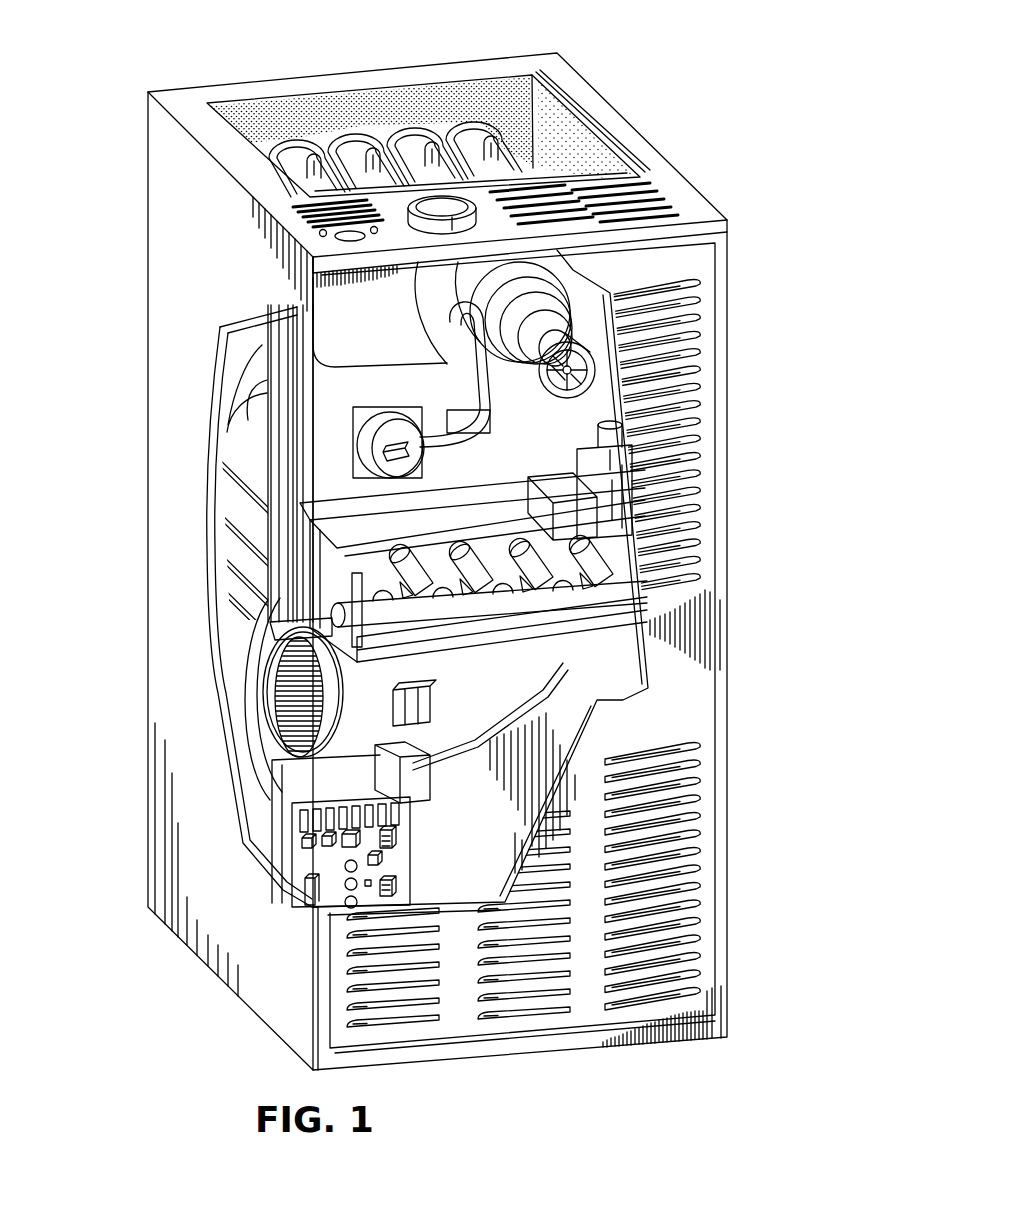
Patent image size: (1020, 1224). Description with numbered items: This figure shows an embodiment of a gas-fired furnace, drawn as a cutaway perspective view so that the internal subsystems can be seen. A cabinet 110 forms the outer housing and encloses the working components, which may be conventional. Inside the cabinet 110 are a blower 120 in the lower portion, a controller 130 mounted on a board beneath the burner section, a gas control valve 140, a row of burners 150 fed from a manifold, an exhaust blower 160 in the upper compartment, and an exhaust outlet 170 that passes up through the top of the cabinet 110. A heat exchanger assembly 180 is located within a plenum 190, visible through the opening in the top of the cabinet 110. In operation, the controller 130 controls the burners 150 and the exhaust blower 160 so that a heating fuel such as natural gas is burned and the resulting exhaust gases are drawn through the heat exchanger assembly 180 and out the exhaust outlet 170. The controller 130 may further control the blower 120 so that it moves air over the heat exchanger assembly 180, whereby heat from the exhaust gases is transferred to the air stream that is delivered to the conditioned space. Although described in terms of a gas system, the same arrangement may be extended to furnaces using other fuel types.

The cabinet 110 is at (437, 561).
The blower 120 is at (257, 700).
The controller 130 is at (400, 867).
The gas control valve 140 is at (535, 510).
The burners 150 is at (583, 592).
The exhaust blower 160 is at (548, 353).
The exhaust outlet 170 is at (432, 250).
The heat exchanger assembly 180 is at (505, 150).
The plenum 190 is at (437, 97).